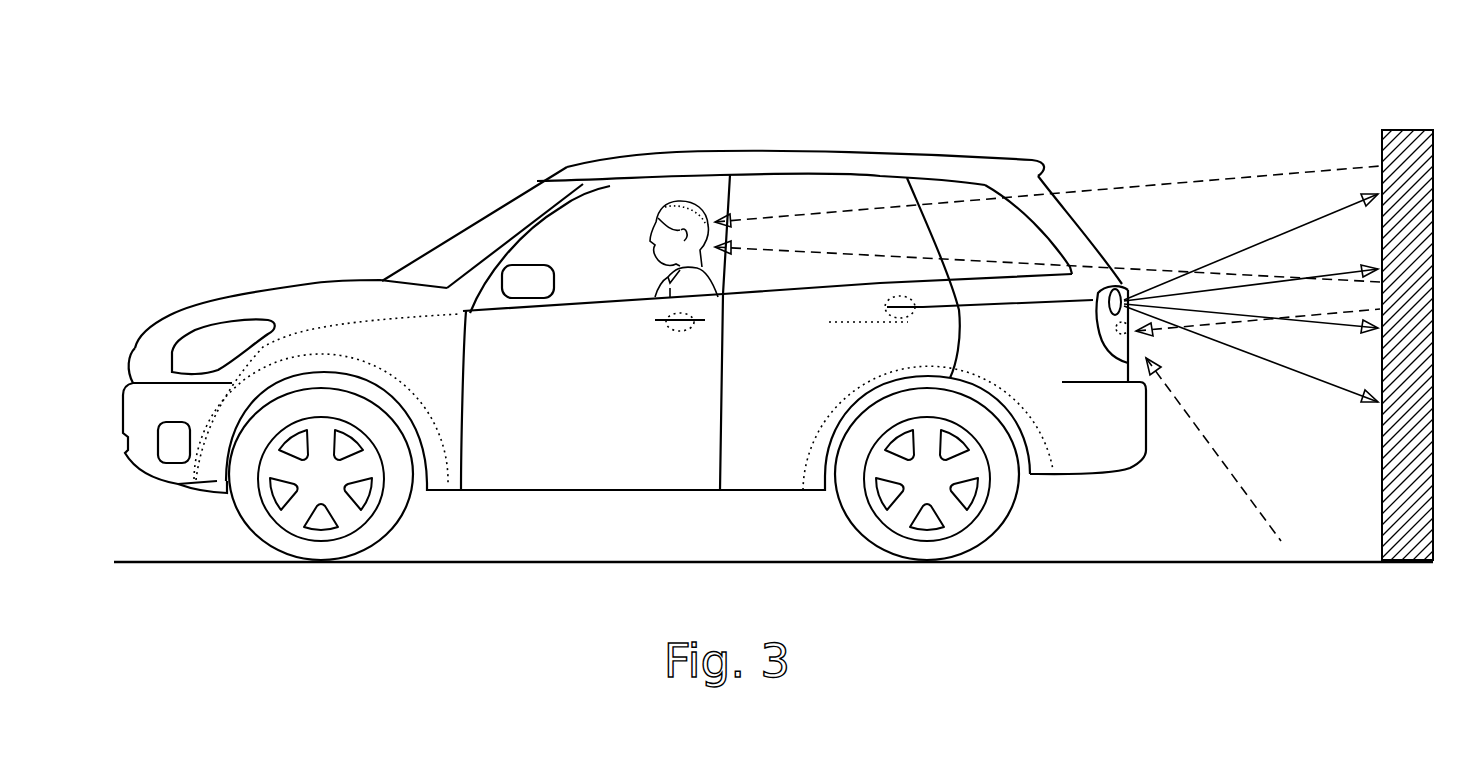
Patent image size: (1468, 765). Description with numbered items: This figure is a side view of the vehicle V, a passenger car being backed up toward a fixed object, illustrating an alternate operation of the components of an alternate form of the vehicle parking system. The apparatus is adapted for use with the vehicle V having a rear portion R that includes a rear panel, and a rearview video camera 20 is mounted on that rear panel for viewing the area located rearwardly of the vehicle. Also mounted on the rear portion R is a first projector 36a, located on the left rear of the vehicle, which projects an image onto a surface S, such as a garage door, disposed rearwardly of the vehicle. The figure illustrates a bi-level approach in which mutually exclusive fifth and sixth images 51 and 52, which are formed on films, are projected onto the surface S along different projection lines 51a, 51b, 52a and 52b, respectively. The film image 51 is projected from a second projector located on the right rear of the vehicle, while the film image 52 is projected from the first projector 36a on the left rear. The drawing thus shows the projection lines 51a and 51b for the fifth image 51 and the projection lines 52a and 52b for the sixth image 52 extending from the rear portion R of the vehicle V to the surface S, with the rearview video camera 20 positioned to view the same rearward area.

The vehicle V is at (842, 143).
The rear portion R is at (1082, 165).
The surface S is at (1380, 141).
The rearview video camera 20 is at (1133, 336).
The first projector 36a is at (1120, 293).
The fifth image 51 is at (1378, 225).
The projection line 51a is at (1285, 228).
The projection line 51b is at (1348, 271).
The sixth image 52 is at (1378, 364).
The projection line 52a is at (1235, 316).
The projection line 52b is at (1315, 378).